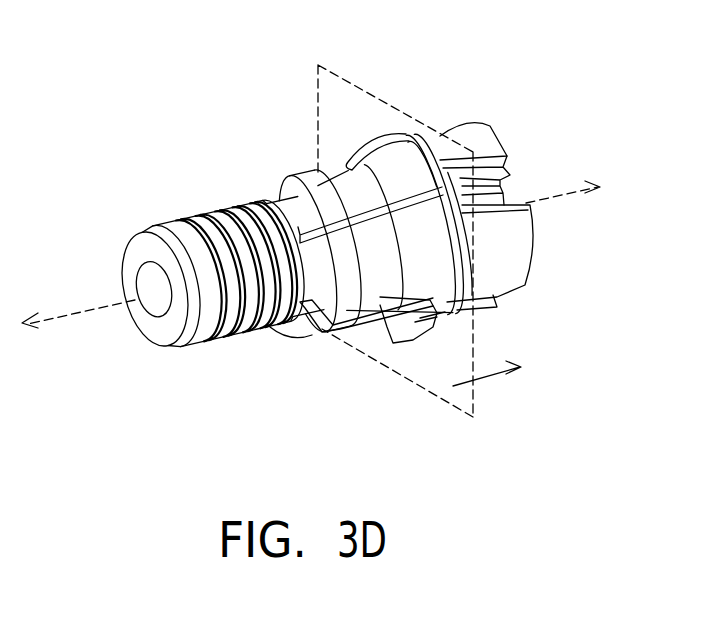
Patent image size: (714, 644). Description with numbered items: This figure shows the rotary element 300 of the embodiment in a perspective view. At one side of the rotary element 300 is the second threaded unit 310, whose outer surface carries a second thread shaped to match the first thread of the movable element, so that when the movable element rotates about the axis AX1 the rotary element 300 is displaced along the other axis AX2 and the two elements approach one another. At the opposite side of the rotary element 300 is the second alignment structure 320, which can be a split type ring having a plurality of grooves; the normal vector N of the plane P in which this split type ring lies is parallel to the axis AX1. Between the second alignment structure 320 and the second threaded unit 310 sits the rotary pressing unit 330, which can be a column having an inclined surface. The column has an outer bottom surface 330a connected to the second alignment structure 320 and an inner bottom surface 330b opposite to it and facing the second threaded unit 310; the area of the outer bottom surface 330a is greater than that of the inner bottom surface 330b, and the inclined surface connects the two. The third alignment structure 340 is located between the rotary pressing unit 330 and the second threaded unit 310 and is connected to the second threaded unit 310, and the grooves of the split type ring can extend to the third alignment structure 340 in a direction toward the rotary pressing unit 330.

The rotary element 300 is at (239, 57).
The second threaded unit 310 is at (190, 232).
The second alignment structure 320 is at (457, 273).
The rotary pressing unit 330 is at (381, 195).
The outer bottom surface 330a is at (430, 222).
The inner bottom surface 330b is at (350, 160).
The third alignment structure 340 is at (276, 176).
The plane P is at (312, 100).
The normal vector N is at (502, 368).
The axis AX1 is at (570, 174).
The other axis AX2 is at (78, 296).